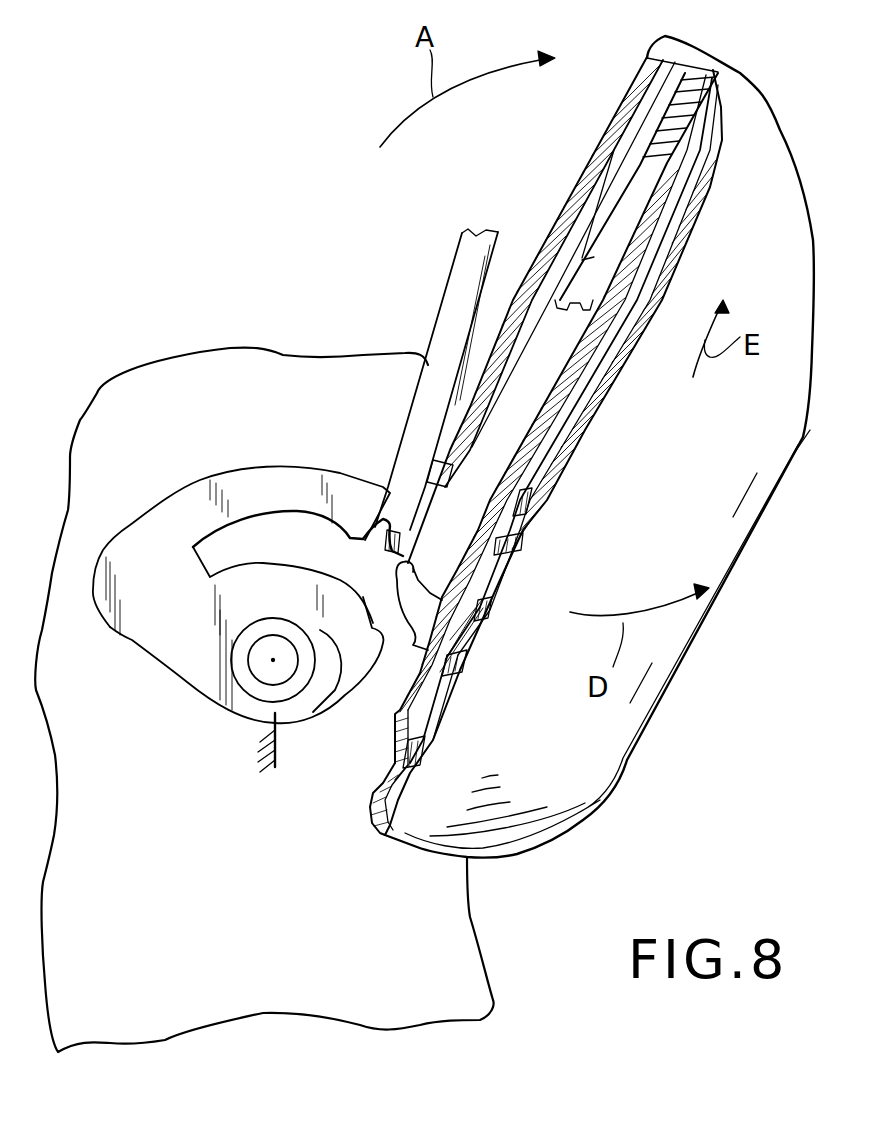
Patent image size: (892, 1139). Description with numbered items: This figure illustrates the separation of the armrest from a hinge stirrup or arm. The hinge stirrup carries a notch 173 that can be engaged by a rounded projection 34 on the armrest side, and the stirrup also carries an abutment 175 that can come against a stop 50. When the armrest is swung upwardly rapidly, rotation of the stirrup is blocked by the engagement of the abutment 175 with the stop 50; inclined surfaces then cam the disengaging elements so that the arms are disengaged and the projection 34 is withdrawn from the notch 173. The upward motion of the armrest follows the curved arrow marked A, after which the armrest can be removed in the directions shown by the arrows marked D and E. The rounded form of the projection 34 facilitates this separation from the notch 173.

The notch 173 is at (323, 540).
The projection 34 is at (428, 545).
The stop 50 is at (277, 753).
The abutment 175 is at (260, 730).